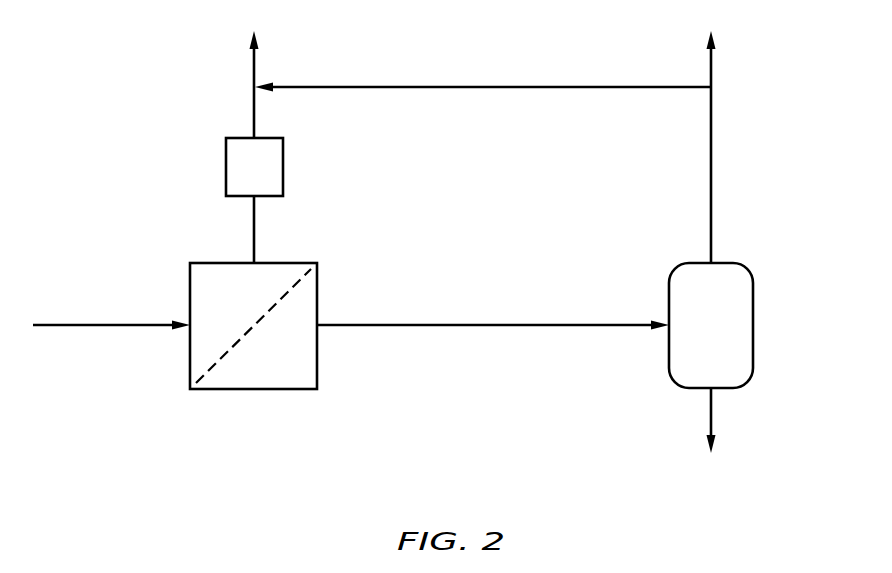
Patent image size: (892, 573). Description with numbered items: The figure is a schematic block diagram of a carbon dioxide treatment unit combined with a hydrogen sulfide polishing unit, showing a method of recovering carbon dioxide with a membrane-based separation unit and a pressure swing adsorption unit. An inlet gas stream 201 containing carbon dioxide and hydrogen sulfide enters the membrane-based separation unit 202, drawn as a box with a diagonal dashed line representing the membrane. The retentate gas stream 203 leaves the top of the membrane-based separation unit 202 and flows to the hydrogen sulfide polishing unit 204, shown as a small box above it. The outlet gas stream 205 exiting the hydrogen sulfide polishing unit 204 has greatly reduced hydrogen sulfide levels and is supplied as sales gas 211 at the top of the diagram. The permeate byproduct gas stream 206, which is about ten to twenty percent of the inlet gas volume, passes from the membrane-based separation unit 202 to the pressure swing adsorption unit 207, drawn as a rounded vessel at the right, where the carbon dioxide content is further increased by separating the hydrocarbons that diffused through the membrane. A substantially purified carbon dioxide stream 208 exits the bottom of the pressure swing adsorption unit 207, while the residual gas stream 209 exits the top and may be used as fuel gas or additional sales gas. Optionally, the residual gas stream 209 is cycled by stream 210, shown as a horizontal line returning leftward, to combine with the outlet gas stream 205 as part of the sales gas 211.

The inlet gas stream 201 is at (117, 325).
The membrane-based separation unit 202 is at (290, 263).
The retentate gas stream 203 is at (254, 233).
The hydrogen sulfide polishing unit 204 is at (283, 165).
The outlet gas stream 205 is at (254, 102).
The permeate byproduct gas stream 206 is at (489, 326).
The pressure swing adsorption unit 207 is at (727, 260).
The substantially purified carbon dioxide stream 208 is at (711, 408).
The residual gas stream 209 is at (711, 155).
The stream 210 is at (477, 87).
The sales gas 211 is at (254, 63).